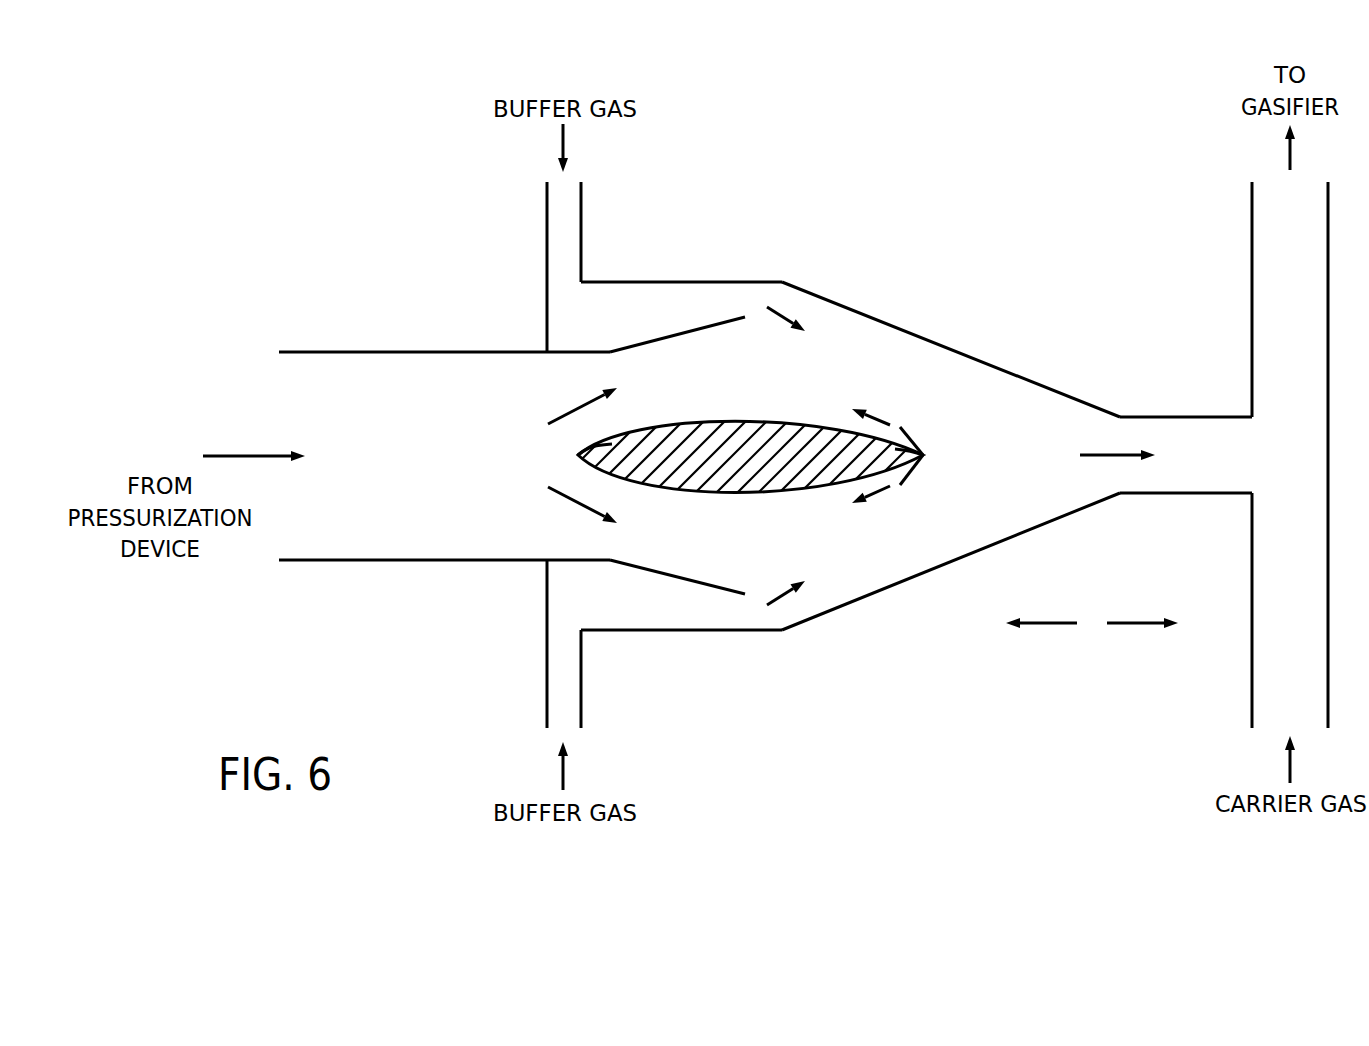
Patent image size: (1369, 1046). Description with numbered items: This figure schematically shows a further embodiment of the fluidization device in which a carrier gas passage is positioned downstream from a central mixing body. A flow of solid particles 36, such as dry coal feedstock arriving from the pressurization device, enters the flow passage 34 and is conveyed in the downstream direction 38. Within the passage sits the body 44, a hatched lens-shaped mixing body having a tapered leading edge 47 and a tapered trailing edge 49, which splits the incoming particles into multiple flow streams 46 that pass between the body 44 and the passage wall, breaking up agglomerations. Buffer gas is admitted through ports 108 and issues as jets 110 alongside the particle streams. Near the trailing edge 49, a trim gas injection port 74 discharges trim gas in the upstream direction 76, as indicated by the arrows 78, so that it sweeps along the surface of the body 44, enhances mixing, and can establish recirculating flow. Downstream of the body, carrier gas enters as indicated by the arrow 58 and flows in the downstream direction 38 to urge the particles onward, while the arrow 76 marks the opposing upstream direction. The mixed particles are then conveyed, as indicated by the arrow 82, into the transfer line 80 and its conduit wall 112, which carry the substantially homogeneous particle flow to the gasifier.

The flow passage 34 is at (404, 564).
The flow of solid particles 36 is at (250, 455).
The downstream direction 38 is at (1134, 625).
The body 44 is at (742, 418).
The flow streams 46 is at (577, 412).
The tapered leading edge 47 is at (578, 455).
The tapered trailing edge 49 is at (925, 455).
The flow of carrier gas 58 is at (1288, 767).
The trim gas injection port 74 is at (912, 434).
The upstream direction 76 is at (1046, 625).
The flow of trim gas 78 is at (878, 419).
The transfer line 80 is at (1184, 416).
The flow toward gasifier 82 is at (1108, 454).
The buffer gas injection wall 108 is at (756, 310).
The buffer gas jet 110 is at (778, 319).
The conduit to gasifier 112 is at (1251, 300).